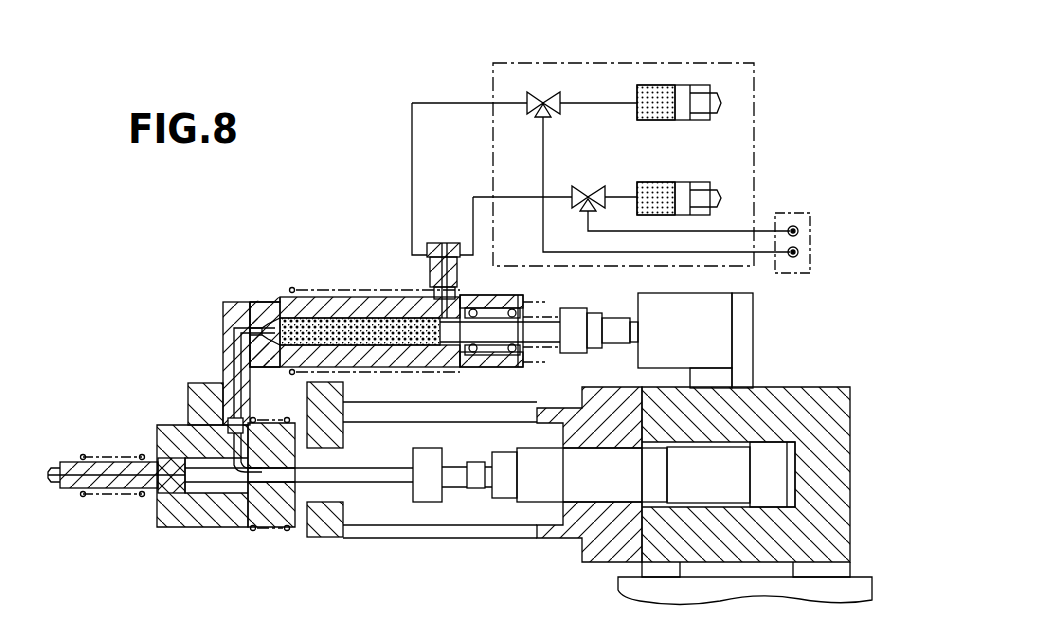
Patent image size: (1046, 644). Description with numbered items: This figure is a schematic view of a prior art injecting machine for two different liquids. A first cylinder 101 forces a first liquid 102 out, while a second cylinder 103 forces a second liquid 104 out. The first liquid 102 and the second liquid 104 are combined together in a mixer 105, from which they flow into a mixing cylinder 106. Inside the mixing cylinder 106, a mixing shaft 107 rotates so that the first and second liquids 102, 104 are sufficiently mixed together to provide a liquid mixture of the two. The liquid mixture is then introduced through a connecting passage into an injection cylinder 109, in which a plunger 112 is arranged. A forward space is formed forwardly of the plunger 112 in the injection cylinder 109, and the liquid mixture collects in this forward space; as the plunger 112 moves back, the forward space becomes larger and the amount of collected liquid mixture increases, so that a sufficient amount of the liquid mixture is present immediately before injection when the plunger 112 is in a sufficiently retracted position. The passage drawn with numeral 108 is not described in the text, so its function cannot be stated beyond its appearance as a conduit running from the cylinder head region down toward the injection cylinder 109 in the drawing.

The first cylinder 101 is at (702, 85).
The first liquid 102 is at (653, 85).
The second cylinder 103 is at (702, 182).
The second liquid 104 is at (653, 182).
The mixer 105 is at (441, 243).
The mixing cylinder 106 is at (360, 297).
The mixing shaft 107 is at (327, 328).
The pressure fluid passage 108 is at (236, 352).
The injection cylinder 109 is at (272, 530).
The plunger 112 is at (383, 484).